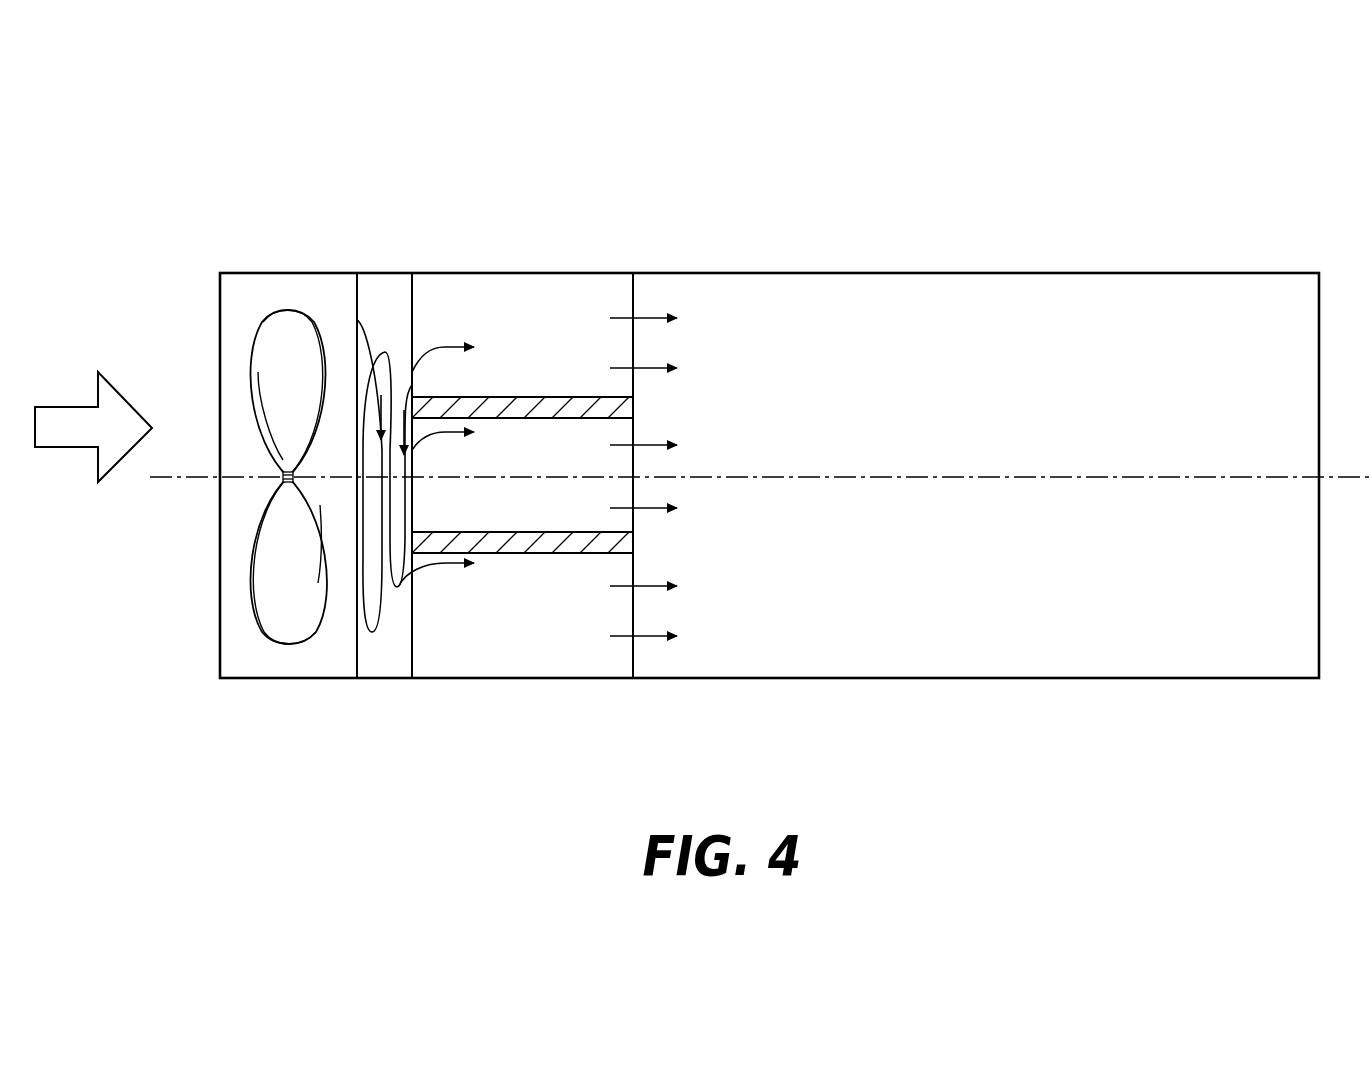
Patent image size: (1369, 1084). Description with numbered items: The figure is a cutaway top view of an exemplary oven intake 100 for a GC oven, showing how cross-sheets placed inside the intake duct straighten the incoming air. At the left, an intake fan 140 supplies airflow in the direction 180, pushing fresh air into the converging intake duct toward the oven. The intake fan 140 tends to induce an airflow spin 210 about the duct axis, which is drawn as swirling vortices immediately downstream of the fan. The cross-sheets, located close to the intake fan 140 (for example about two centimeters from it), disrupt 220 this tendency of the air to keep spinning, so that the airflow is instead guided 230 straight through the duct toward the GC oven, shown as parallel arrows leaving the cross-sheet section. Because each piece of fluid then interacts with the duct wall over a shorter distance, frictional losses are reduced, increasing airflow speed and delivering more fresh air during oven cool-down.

The oven intake 100 is at (1120, 192).
The intake fan 140 is at (287, 313).
The airflow direction 180 is at (125, 400).
The airflow spin 210 is at (385, 346).
The disruption of spin 220 is at (470, 338).
The guided airflow 230 is at (670, 306).